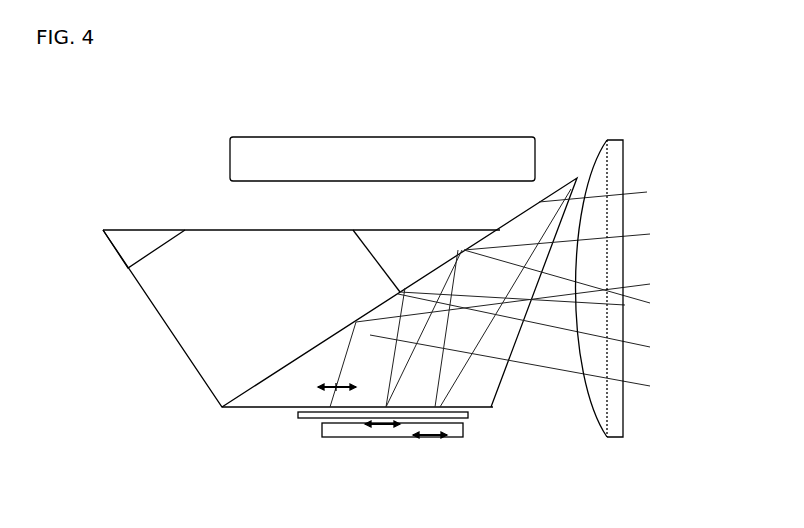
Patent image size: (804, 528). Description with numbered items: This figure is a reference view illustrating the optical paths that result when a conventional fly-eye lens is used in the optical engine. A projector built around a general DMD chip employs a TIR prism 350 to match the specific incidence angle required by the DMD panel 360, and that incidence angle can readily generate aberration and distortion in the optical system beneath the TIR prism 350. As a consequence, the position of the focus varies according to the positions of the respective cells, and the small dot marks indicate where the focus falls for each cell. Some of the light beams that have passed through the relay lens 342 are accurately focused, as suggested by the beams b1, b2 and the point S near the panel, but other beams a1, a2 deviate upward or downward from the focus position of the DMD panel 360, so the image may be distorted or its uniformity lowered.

The relay lens 342 is at (627, 163).
The TIR prism 350 is at (243, 409).
The DMD panel 360 is at (370, 438).
The light beam a1 is at (321, 424).
The light beam a2 is at (452, 427).
The sensor pitch b1 is at (430, 430).
The sensor pitch b2 is at (329, 430).
The sensor point S is at (382, 429).